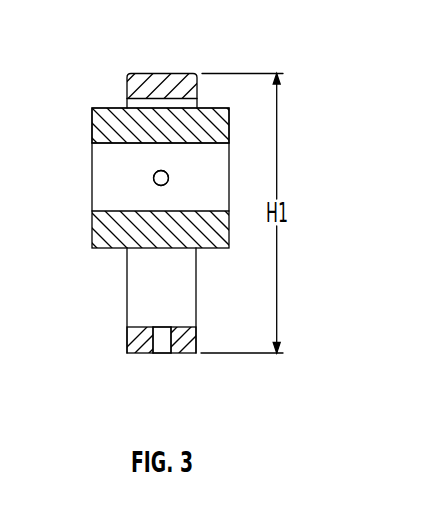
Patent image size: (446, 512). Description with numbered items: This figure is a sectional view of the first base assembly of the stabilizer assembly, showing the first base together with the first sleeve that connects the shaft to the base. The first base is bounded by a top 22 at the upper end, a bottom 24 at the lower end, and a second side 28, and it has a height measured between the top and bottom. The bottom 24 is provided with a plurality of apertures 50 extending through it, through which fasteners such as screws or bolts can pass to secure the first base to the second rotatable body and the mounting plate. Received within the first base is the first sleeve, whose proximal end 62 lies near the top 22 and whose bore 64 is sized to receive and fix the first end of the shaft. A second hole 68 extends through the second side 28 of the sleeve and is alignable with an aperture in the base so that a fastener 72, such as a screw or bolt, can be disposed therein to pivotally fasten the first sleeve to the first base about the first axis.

The top 22 is at (161, 73).
The proximal end 62 is at (92, 123).
The bore 64 is at (92, 178).
The second hole 68 is at (167, 172).
The fastener 72 is at (160, 178).
The second side 28 is at (197, 302).
The bottom 24 is at (177, 355).
The apertures 50 is at (162, 355).